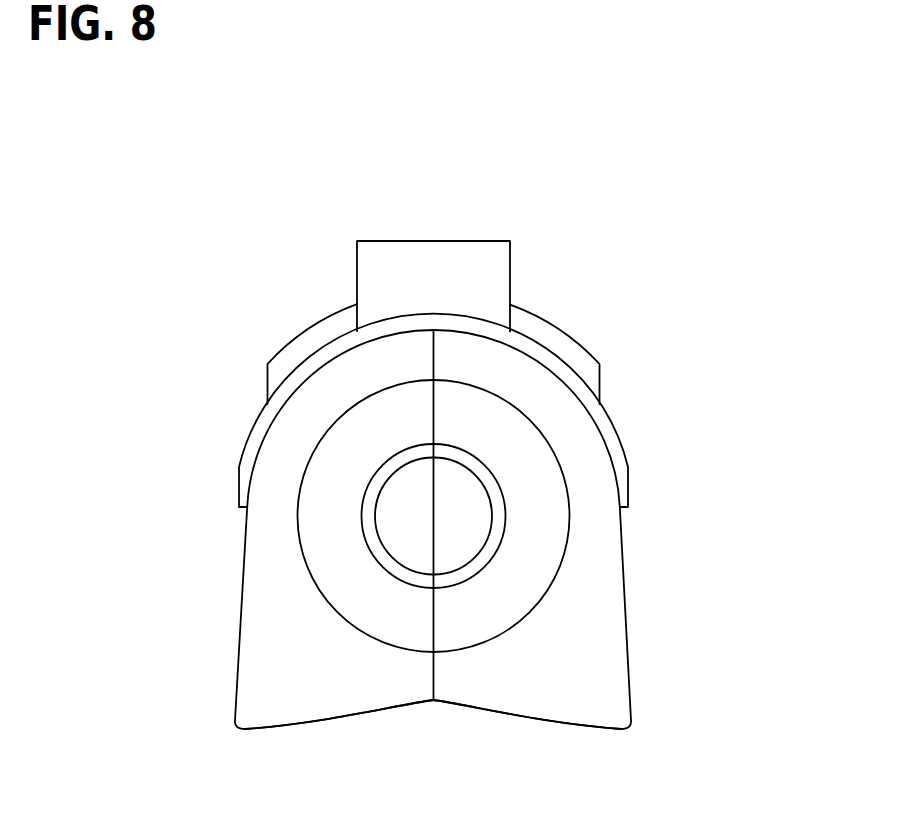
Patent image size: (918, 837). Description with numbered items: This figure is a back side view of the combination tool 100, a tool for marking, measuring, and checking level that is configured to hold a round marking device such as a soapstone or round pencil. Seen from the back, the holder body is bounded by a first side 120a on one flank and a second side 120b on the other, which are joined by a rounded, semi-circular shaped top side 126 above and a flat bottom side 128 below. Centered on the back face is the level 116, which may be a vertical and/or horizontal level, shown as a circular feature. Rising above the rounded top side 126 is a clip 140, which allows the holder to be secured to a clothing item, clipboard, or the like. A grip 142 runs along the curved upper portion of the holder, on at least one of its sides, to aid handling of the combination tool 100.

The combination tool 100 is at (595, 202).
The level 116 is at (490, 498).
The first side 120a is at (245, 540).
The second side 120b is at (622, 555).
The rounded top side 126 is at (322, 357).
The flat bottom side 128 is at (540, 712).
The clip 140 is at (398, 240).
The grip 142 is at (560, 333).